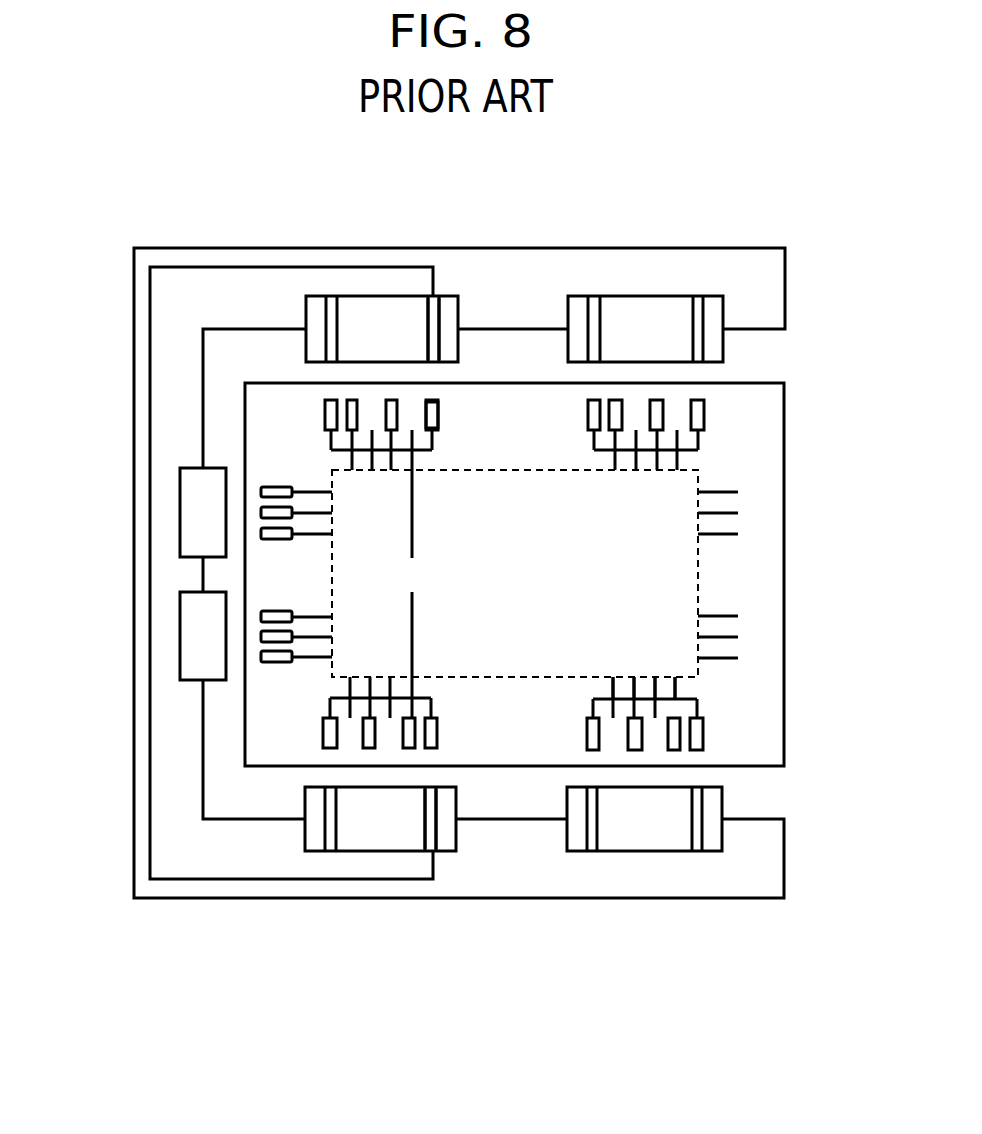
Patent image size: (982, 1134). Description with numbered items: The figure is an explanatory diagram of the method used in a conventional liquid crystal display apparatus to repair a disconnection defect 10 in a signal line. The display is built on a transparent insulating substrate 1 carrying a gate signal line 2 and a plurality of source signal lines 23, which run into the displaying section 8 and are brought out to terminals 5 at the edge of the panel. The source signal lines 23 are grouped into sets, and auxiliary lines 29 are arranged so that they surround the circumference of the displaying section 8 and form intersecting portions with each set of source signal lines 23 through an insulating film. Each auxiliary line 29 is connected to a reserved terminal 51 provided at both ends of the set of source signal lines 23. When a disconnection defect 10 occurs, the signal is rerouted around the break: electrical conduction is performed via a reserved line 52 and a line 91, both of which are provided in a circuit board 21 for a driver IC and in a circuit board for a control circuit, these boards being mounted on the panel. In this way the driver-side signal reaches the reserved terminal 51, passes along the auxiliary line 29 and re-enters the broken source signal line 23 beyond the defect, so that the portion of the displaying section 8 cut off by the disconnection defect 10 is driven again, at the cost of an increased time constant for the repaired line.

The transparent insulating substrate 1 is at (765, 603).
The gate signal line 2 is at (722, 483).
The terminals 5 is at (391, 412).
The displaying section 8 is at (697, 573).
The disconnection defect 10 is at (410, 578).
The circuit board for a driver IC 21 is at (365, 315).
The source signal lines 23 is at (676, 688).
The auxiliary lines 29 is at (331, 446).
The reserved terminals 51 is at (433, 412).
The reserved lines 52 is at (430, 310).
The line 91 is at (151, 310).